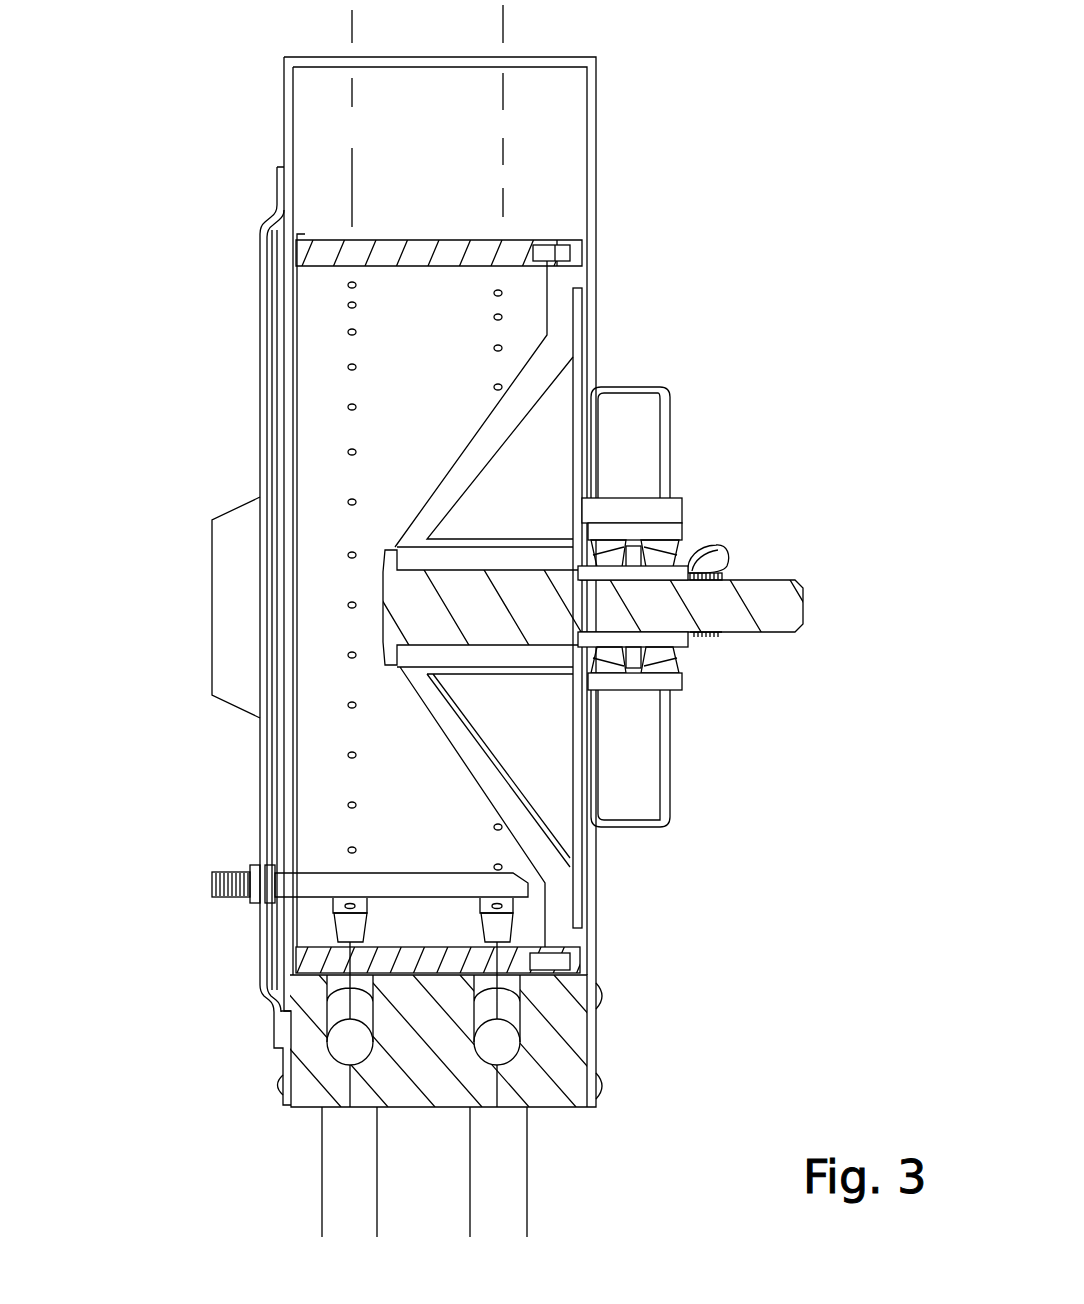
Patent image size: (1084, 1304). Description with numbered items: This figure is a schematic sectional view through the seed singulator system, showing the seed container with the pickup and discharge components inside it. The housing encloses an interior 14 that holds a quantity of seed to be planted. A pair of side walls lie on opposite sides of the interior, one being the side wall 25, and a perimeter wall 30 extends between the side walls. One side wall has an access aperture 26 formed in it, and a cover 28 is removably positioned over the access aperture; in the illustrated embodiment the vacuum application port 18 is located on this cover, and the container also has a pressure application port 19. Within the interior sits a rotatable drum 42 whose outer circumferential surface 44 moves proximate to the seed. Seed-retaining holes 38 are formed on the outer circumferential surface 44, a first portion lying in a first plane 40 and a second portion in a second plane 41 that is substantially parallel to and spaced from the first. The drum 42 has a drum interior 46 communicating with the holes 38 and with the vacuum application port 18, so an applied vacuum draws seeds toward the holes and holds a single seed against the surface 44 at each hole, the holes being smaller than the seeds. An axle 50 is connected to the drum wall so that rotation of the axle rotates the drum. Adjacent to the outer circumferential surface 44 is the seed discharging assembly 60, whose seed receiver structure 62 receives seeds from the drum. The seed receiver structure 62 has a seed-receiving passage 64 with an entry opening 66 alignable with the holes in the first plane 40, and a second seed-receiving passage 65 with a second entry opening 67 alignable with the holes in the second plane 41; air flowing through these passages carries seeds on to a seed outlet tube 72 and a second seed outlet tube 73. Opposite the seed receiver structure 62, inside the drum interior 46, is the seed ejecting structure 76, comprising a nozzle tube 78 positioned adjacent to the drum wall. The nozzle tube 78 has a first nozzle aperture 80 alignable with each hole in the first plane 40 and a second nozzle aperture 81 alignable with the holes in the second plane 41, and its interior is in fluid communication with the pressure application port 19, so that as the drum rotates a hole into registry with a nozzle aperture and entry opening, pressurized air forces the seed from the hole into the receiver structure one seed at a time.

The interior 14 is at (340, 122).
The vacuum application port 18 is at (212, 592).
The pressure application port 19 is at (212, 887).
The side wall 25 is at (595, 898).
The access aperture 26 is at (282, 290).
The cover 28 is at (265, 780).
The perimeter wall 30 is at (402, 213).
The seed-retaining holes 38 is at (494, 387).
The first plane 40 is at (352, 30).
The second plane 41 is at (503, 28).
The rotatable drum 42 is at (490, 253).
The outer circumferential surface 44 is at (442, 241).
The drum interior 46 is at (365, 736).
The axle 50 is at (750, 602).
The seed discharging assembly 60 is at (618, 952).
The seed receiver structure 62 is at (418, 1078).
The seed-receiving passage 64 is at (325, 1038).
The second seed-receiving passage 65 is at (520, 1040).
The entry opening 66 is at (343, 995).
The second entry opening 67 is at (500, 1008).
The seed outlet tube 72 is at (340, 1130).
The second leg 73 is at (510, 1145).
The seed ejecting structure 76 is at (465, 847).
The nozzle tube 78 is at (305, 883).
The nozzle aperture 80 is at (343, 928).
The second nozzle aperture 81 is at (497, 928).